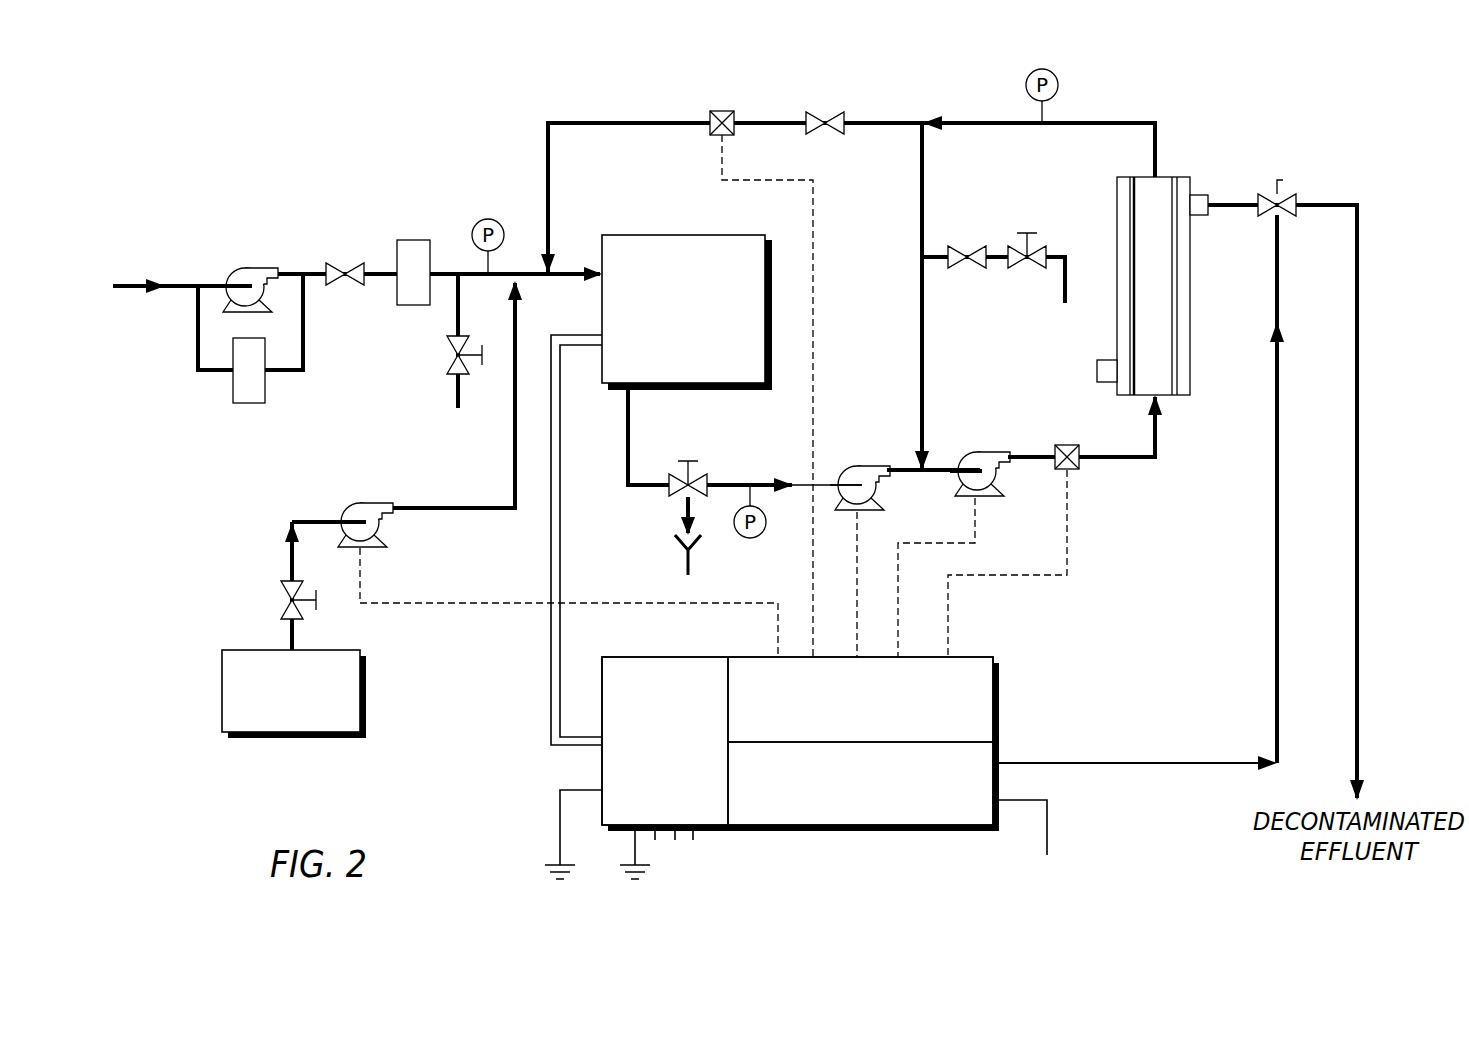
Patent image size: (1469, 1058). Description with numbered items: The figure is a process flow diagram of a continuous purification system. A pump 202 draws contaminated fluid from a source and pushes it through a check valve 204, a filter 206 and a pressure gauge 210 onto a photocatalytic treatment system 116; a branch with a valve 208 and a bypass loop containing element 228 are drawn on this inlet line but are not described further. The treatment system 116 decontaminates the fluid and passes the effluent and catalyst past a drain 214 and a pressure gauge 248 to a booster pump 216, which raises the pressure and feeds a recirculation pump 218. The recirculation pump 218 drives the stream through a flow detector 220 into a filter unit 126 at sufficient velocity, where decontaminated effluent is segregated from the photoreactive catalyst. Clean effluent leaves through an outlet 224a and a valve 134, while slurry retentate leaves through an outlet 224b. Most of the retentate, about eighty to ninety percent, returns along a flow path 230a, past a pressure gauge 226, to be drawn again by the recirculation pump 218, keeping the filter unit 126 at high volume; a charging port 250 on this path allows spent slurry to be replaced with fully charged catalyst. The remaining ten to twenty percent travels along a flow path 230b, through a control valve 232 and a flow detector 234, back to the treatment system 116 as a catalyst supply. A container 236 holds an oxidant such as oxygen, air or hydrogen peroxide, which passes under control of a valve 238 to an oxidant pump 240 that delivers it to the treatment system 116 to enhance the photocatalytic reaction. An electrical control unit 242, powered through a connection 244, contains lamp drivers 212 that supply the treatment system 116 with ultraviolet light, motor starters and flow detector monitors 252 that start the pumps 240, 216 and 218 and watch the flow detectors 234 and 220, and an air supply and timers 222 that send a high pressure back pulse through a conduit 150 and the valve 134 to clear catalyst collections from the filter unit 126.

The photocatalytic treatment system 116 is at (668, 235).
The filter unit 126 is at (1117, 208).
The valve 134 is at (1288, 183).
The conduit 150 is at (1277, 565).
The pump 202 is at (262, 266).
The check valve 204 is at (345, 261).
The filter 206 is at (413, 238).
The drain valve 208 is at (447, 357).
The pressure gauge 210 is at (488, 218).
The lamp drivers 212 is at (663, 667).
The drain 214 is at (697, 472).
The booster pump 216 is at (863, 466).
The recirculation pump 218 is at (977, 452).
The flow detector 220 is at (1077, 472).
The air supply and timers 222 is at (900, 818).
The outlet 224a is at (1237, 203).
The outlet 224b is at (1152, 140).
The pressure gauge 226 is at (1025, 83).
The bypass flow meter 228 is at (232, 393).
The flow path 230a is at (922, 157).
The flow path 230b is at (623, 122).
The control valve 232 is at (825, 112).
The flow detector 234 is at (722, 110).
The container 236 is at (220, 687).
The valve 238 is at (277, 600).
The oxidant pump 240 is at (363, 501).
The electrical control unit 242 is at (853, 744).
The connection 244 is at (1048, 827).
The pressure gauge 248 is at (752, 538).
The charging port 250 is at (1027, 269).
The motor starters and flow detector monitors 252 is at (972, 670).